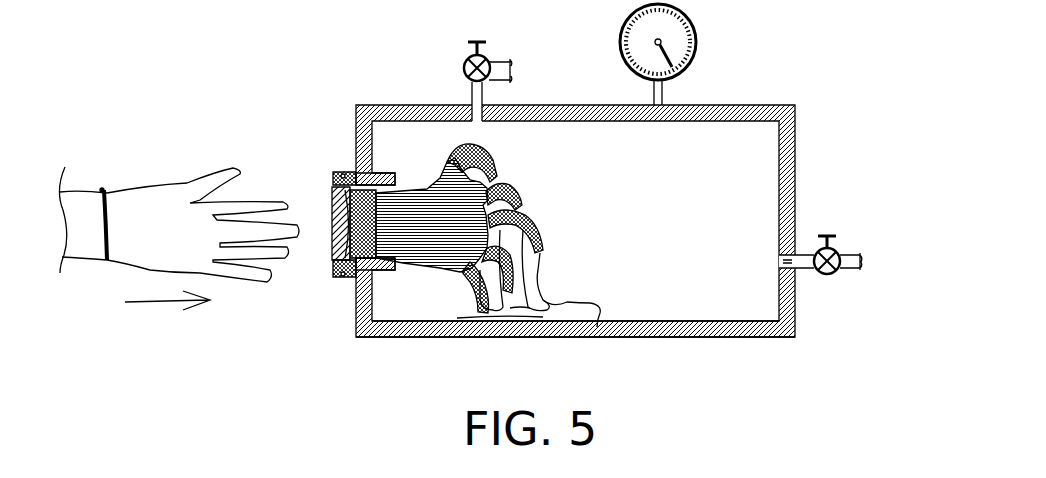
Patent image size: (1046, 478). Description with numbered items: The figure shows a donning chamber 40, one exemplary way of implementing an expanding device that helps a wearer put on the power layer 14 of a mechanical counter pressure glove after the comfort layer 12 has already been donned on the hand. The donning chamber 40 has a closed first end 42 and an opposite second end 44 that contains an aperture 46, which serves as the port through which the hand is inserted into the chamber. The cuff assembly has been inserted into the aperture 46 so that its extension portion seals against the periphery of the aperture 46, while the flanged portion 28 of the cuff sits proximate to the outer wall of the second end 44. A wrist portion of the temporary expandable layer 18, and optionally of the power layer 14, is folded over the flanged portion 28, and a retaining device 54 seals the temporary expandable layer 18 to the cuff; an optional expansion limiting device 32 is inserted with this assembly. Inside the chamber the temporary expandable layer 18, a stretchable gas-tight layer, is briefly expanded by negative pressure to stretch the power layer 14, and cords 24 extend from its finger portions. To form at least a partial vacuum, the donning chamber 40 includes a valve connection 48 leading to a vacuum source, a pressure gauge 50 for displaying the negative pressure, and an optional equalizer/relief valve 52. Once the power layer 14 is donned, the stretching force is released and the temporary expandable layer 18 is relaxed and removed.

The comfort layer 12 is at (155, 197).
The power layer 14 is at (487, 153).
The temporary expandable layer 18 is at (338, 256).
The cords 24 is at (594, 320).
The flanged portion 28 is at (330, 183).
The expansion limiting device 32 is at (447, 158).
The donning chamber 40 is at (741, 337).
The first end 42 is at (609, 255).
The second end 44 is at (320, 62).
The aperture 46 is at (403, 272).
The valve connection 48 is at (838, 300).
The pressure gauge 50 is at (697, 42).
The equalizer/relief valve 52 is at (495, 63).
The retaining device 54 is at (343, 172).